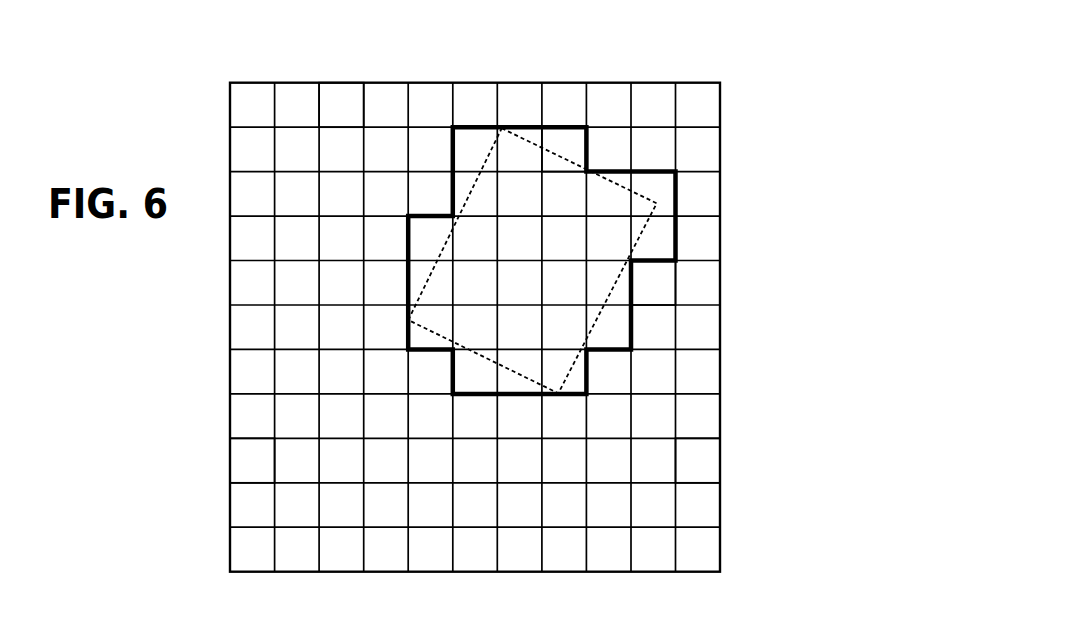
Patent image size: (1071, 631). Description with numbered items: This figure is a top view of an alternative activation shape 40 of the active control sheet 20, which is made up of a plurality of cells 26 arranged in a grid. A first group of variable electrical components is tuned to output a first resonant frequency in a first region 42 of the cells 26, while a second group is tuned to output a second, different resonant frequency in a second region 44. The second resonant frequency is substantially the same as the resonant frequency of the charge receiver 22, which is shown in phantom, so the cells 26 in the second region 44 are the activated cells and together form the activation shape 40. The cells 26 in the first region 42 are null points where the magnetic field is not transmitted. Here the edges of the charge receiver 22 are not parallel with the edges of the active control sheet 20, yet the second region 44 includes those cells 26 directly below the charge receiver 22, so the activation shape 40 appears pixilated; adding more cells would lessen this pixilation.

The active control sheet 20 is at (748, 82).
The charge receiver 22 is at (647, 193).
The cells 26 is at (348, 103).
The activation shape 40 is at (450, 126).
The first region 42 is at (700, 460).
The second region 44 is at (560, 138).